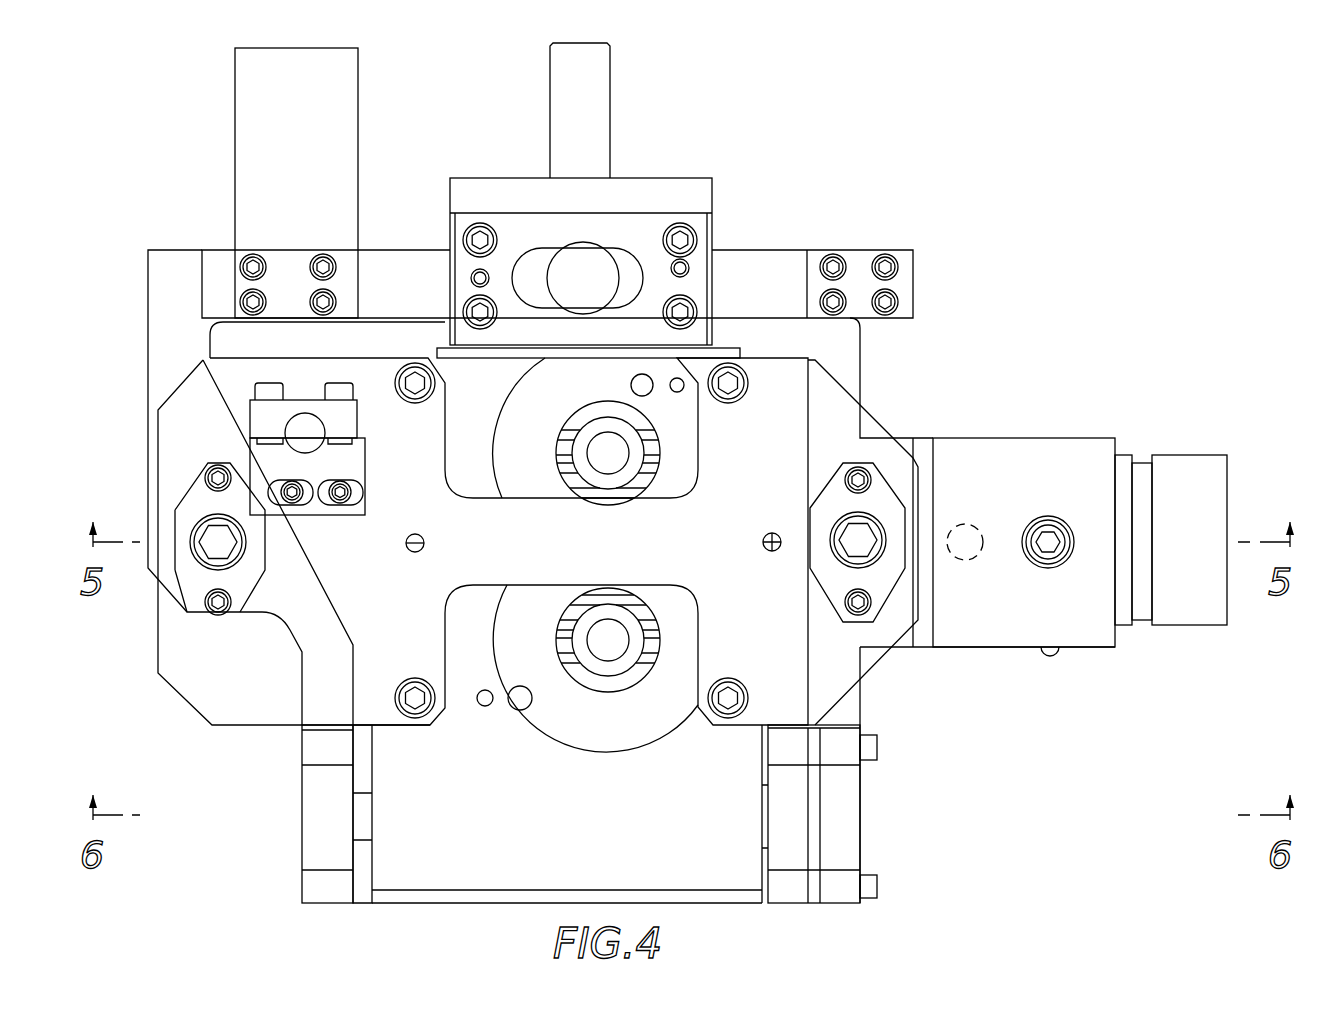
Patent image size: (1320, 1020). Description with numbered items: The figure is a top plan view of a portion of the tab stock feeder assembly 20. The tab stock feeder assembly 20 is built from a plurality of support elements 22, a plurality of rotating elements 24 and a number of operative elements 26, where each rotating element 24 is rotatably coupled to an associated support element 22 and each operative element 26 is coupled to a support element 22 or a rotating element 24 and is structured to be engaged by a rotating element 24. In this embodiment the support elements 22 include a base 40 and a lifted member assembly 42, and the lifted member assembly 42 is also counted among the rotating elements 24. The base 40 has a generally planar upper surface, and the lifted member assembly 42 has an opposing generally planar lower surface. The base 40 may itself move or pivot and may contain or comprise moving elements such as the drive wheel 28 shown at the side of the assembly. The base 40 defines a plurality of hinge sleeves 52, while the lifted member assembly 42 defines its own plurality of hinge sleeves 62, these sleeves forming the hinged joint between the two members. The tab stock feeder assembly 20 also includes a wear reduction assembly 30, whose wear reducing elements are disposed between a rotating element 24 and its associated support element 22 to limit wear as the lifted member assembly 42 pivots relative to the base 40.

The tab stock feeder assembly 20 is at (609, 600).
The support element 22 is at (757, 112).
The rotating element 24 is at (650, 158).
The operative element 26 is at (463, 162).
The drive wheel 28 is at (1232, 437).
The wear reduction assembly 30 is at (905, 860).
The base 40 is at (145, 268).
The lifted member assembly 42 is at (735, 225).
The hinge sleeves 52 is at (463, 903).
The hinge sleeves 62 is at (328, 893).